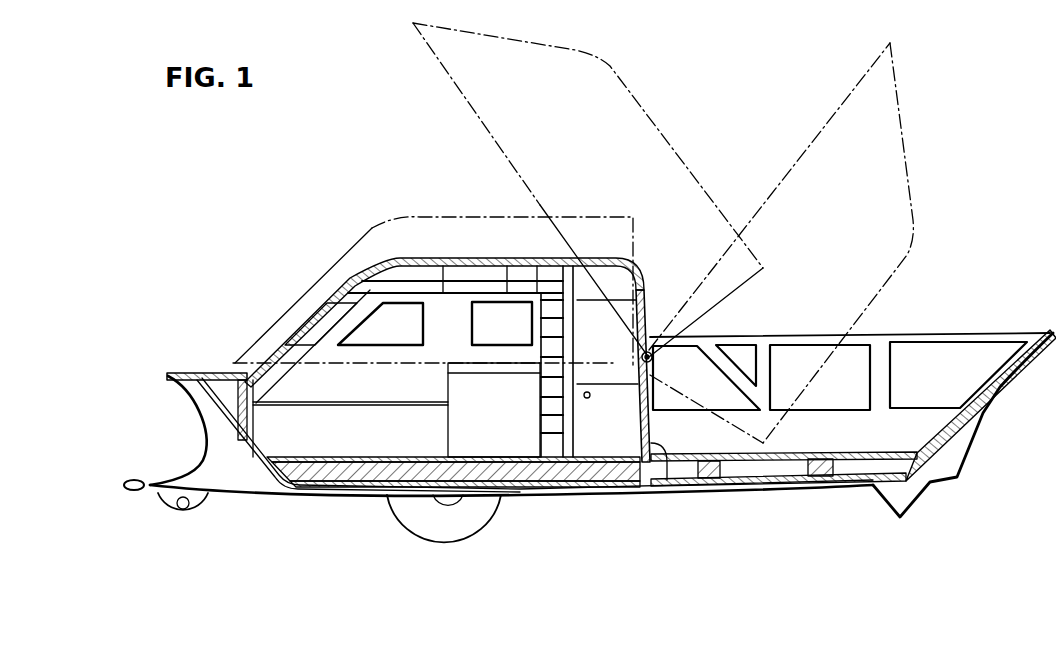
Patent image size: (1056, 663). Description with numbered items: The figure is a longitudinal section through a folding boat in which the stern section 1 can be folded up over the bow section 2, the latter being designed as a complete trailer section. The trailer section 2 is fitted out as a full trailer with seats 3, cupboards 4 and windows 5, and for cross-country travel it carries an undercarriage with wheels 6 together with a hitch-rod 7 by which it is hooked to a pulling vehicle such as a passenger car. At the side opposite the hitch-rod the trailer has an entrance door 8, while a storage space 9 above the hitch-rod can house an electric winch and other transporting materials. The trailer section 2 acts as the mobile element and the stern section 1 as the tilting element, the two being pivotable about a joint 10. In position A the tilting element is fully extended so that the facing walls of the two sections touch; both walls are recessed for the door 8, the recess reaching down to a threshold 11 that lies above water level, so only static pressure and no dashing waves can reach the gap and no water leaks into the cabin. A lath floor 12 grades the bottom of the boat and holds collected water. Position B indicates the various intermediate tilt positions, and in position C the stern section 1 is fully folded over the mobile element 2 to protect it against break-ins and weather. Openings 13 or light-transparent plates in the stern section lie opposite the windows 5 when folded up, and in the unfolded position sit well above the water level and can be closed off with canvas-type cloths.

The stern section 1 is at (921, 506).
The bow section 2 is at (381, 497).
The seats 3 is at (341, 438).
The cupboards 4 is at (520, 283).
The windows 5 is at (495, 313).
The wheels 6 is at (487, 522).
The hitch-rod 7 is at (153, 484).
The entrance door 8 is at (638, 417).
The storage space 9 is at (212, 376).
The joint 10 is at (652, 363).
The threshold 11 is at (666, 476).
The lath floor 12 is at (715, 483).
The openings 13 is at (862, 362).
The position A is at (871, 492).
The position B is at (784, 187).
The position C is at (326, 279).